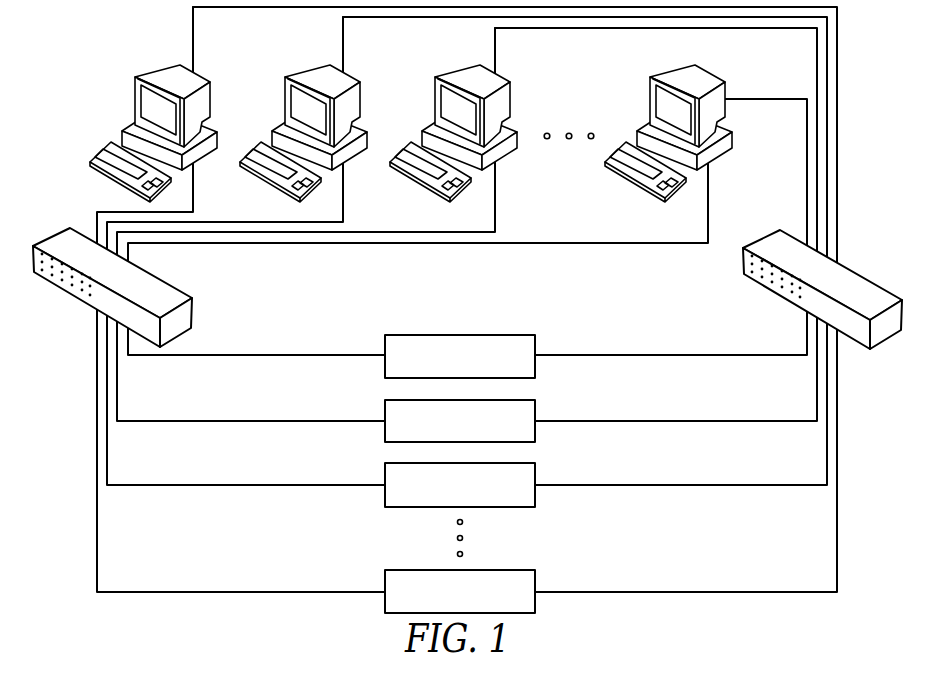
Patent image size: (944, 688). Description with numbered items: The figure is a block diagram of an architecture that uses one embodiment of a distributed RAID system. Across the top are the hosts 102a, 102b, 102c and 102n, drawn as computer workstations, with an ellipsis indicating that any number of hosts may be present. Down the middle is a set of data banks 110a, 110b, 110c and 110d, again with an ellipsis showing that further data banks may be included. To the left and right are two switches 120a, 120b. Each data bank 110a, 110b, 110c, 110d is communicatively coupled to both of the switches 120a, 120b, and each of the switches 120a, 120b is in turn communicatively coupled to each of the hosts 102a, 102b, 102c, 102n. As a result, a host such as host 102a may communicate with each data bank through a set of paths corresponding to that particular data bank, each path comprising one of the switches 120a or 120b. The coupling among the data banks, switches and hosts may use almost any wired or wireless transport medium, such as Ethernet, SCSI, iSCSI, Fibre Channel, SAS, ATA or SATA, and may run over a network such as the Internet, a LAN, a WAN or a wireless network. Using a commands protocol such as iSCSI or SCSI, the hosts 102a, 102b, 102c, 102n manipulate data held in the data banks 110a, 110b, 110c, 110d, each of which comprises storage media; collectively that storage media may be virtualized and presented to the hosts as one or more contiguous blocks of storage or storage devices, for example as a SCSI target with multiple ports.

The host 102a is at (170, 68).
The host 102b is at (320, 68).
The host 102c is at (468, 68).
The host 102n is at (712, 70).
The data bank 110a is at (537, 345).
The data bank 110b is at (537, 410).
The data bank 110c is at (537, 496).
The data bank 110d is at (537, 604).
The switch 120a is at (67, 295).
The switch 120b is at (779, 297).